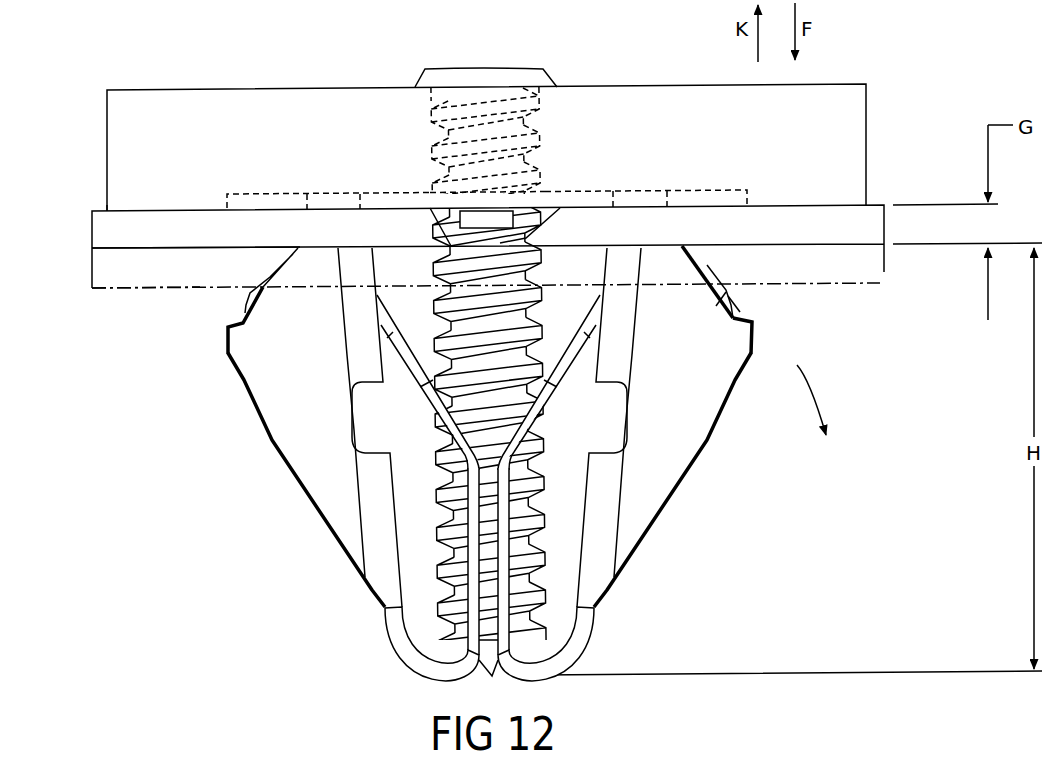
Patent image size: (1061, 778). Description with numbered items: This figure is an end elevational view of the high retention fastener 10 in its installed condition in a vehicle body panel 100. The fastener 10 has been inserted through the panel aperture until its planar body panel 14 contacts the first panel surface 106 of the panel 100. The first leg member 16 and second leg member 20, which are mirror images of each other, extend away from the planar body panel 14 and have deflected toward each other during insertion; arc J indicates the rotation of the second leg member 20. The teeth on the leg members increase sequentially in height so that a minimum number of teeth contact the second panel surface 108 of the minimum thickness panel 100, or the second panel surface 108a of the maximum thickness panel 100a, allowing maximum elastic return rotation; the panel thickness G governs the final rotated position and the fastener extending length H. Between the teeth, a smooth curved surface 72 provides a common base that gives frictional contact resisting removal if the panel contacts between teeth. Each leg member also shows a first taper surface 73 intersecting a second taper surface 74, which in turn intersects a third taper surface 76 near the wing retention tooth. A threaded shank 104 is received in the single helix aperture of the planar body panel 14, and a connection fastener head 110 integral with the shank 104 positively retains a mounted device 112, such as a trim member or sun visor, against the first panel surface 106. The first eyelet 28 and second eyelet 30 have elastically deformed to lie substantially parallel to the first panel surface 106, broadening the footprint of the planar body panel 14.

The high retention fastener 10 is at (720, 515).
The planar body panel 14 is at (393, 190).
The first leg member 16 is at (275, 403).
The second leg member 20 is at (713, 348).
The first eyelet 28 is at (236, 193).
The second eyelet 30 is at (690, 193).
The smooth curved surface 72 is at (259, 282).
The first taper surface 73 is at (348, 545).
The second taper surface 74 is at (245, 395).
The third taper surface 76 is at (224, 339).
The panel 100 is at (112, 223).
The maximum thickness panel 100a is at (884, 273).
The shank 104 is at (532, 165).
The first panel surface 106 is at (145, 208).
The second panel surface 108 is at (184, 252).
The second panel surface 108a is at (122, 291).
The connection fastener head 110 is at (540, 73).
The mounted device 112 is at (830, 92).